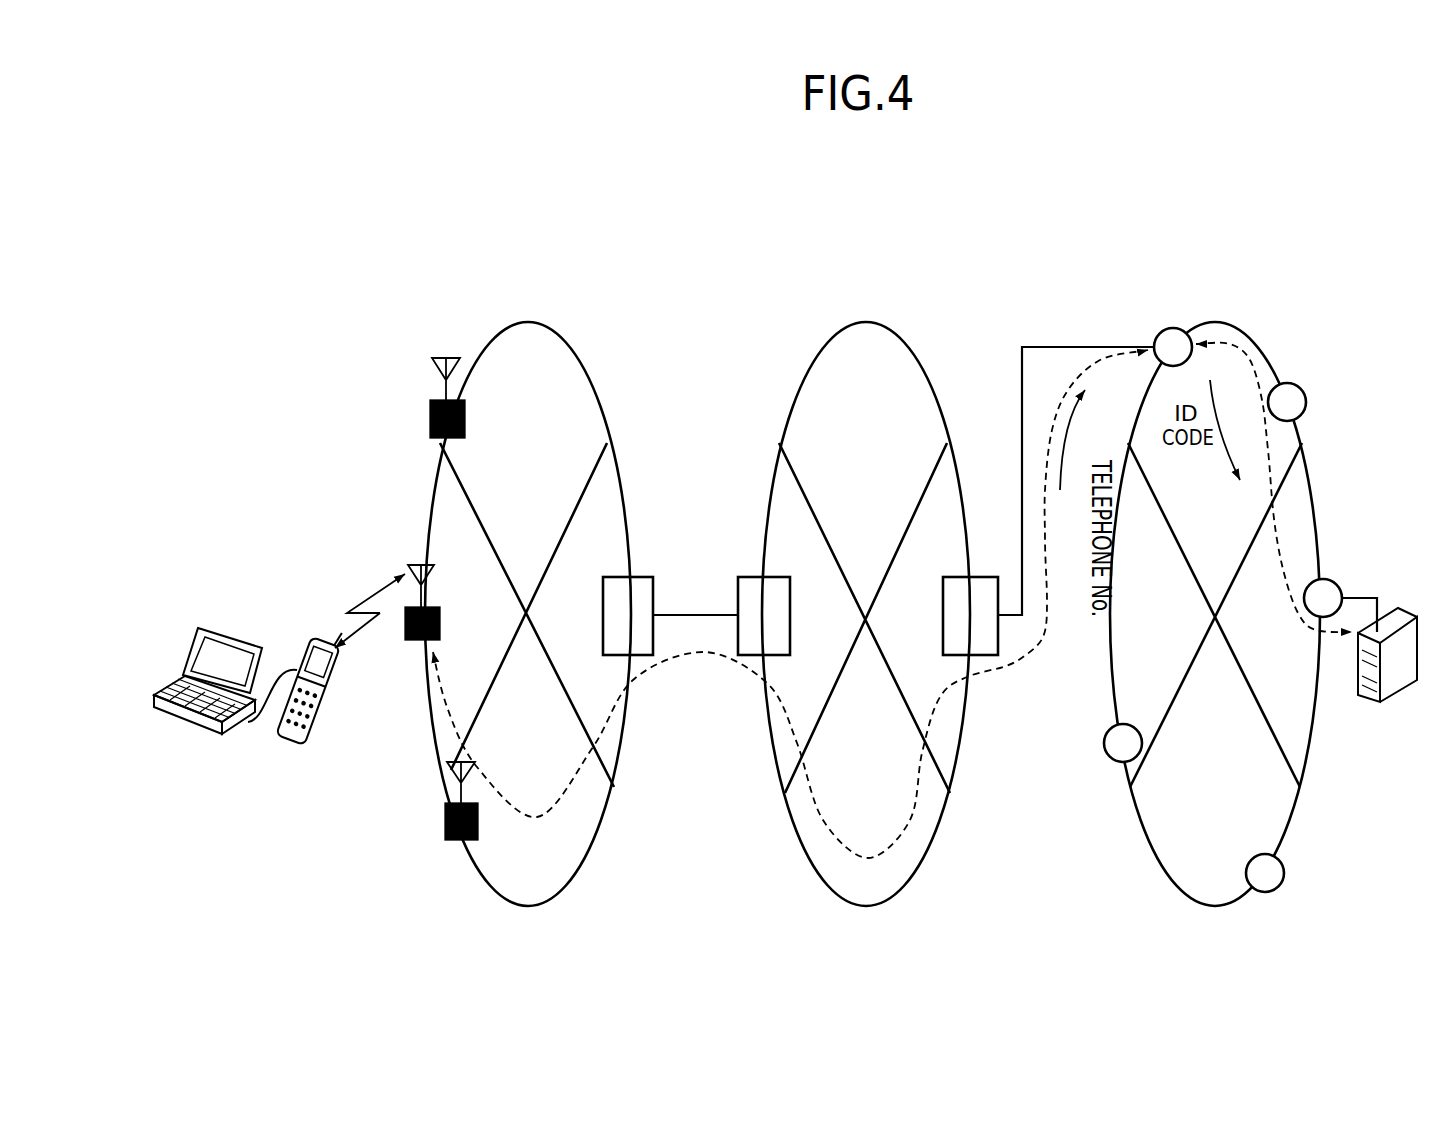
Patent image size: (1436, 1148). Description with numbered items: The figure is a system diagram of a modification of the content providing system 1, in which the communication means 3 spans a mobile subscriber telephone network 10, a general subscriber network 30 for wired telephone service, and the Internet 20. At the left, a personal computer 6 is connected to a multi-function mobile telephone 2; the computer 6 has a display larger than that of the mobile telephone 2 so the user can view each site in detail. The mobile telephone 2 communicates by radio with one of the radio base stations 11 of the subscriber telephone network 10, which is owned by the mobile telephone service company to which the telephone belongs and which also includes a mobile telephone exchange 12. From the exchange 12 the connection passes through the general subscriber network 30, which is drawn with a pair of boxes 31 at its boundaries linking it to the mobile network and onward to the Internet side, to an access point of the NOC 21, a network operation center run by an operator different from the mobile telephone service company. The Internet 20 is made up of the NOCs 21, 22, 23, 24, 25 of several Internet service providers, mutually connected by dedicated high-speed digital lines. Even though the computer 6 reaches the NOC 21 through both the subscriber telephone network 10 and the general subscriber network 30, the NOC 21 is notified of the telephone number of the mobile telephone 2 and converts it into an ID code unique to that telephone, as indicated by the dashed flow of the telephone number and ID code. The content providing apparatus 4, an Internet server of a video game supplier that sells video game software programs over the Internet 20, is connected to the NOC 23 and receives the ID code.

The content providing system 1 is at (1333, 306).
The multi-function mobile telephone 2 is at (320, 680).
The communication means 3 is at (620, 186).
The content providing apparatus 4 is at (1387, 704).
The personal computer 6 is at (237, 632).
The subscriber telephone network 10 is at (596, 290).
The radio base stations 11 is at (430, 420).
The mobile telephone exchange 12 is at (644, 577).
The Internet 20 is at (1107, 278).
The NOC 21 is at (1172, 330).
The NOC 22 is at (1295, 395).
The NOC 23 is at (1337, 588).
The NOC 24 is at (1272, 884).
The NOC 25 is at (1111, 760).
The general subscriber network 30 is at (878, 292).
The gateway 31 is at (745, 577).